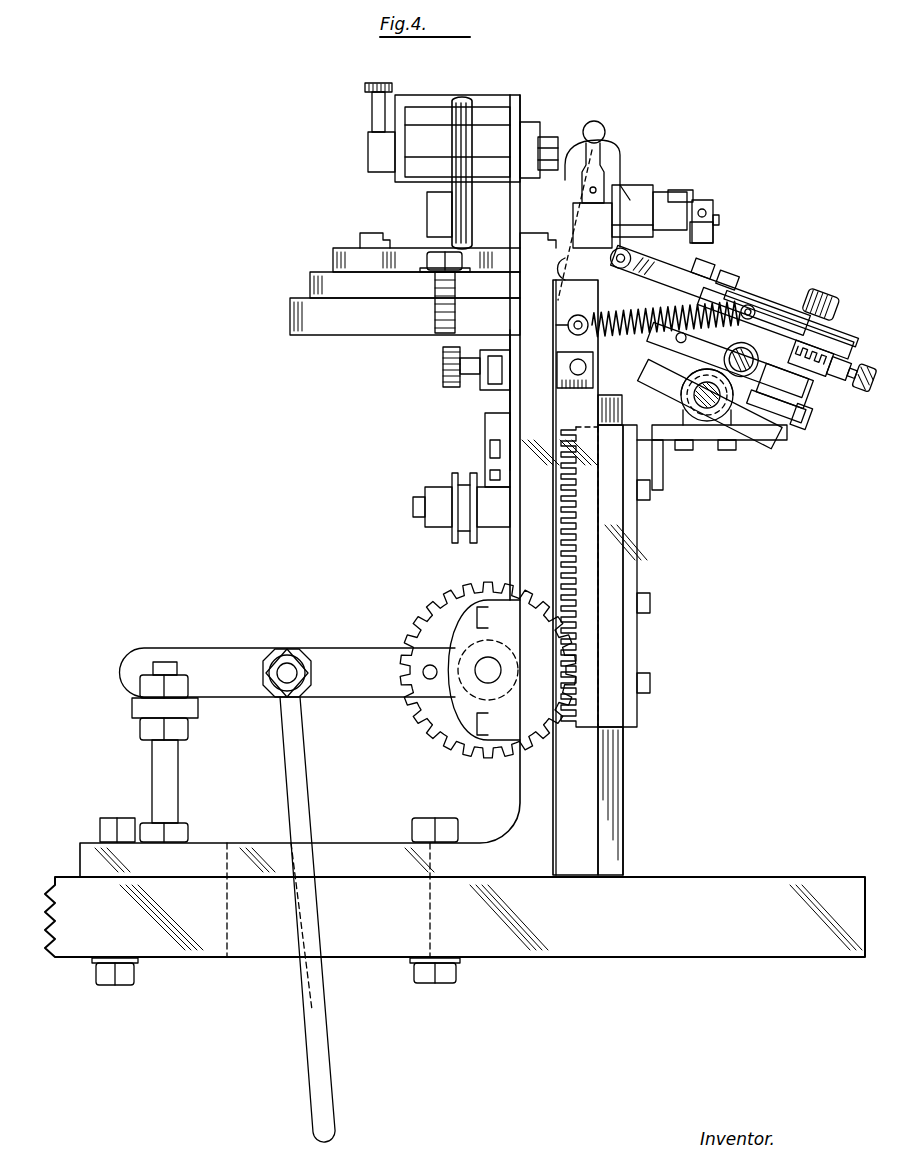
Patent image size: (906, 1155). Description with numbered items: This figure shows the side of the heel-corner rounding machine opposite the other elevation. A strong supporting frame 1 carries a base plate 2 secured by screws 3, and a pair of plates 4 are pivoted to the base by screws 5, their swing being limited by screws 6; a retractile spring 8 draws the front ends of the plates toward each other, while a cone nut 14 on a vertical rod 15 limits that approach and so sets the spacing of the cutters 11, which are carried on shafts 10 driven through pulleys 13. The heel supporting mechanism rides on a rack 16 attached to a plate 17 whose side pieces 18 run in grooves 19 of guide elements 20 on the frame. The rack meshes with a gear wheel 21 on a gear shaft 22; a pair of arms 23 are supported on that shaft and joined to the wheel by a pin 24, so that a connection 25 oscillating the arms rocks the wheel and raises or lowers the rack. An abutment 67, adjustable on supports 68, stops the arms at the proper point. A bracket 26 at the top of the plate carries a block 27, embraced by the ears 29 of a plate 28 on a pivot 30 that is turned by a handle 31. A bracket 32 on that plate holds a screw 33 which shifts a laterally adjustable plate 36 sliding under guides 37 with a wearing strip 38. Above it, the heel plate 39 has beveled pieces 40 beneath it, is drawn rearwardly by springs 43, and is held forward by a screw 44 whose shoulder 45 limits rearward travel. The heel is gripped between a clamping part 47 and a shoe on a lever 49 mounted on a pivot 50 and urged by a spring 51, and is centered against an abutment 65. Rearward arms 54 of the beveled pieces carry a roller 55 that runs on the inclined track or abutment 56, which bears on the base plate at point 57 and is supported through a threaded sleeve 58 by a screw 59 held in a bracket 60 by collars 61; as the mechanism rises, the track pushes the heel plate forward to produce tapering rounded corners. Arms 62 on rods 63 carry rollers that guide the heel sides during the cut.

The supporting frame 1 is at (290, 320).
The base plate 2 is at (310, 285).
The screws 3 is at (440, 298).
The plates 4 is at (333, 262).
The screws 5 is at (372, 240).
The screws 6 is at (532, 240).
The retractile spring 8 is at (603, 128).
The shaft 10 is at (432, 204).
The cutter 11 is at (668, 205).
The pulleys 13 is at (456, 232).
The cone nut 14 is at (584, 170).
The vertical rod 15 is at (563, 158).
The rack 16 is at (590, 573).
The plate 17 is at (630, 660).
The side pieces 18 is at (608, 712).
The grooves 19 is at (612, 815).
The guide elements 20 is at (582, 762).
The gear wheel 21 is at (460, 723).
The gear shaft 22 is at (482, 672).
The arms 23 is at (223, 665).
The pin 24 is at (428, 675).
The connection 25 is at (292, 737).
The bracket 26 is at (640, 545).
The block 27 is at (682, 418).
The plate 28 is at (806, 402).
The ears 29 is at (730, 414).
The pivot 30 is at (707, 398).
The handle 31 is at (662, 372).
The bracket 32 is at (778, 397).
The screw 33 is at (768, 378).
The laterally adjustable plate 36 is at (818, 375).
The guides 37 is at (700, 325).
The wearing strip 38 is at (733, 345).
The plate 39 is at (792, 330).
The beveled pieces 40 is at (822, 340).
The springs 43 is at (645, 333).
The screw 44 is at (866, 392).
The shoulder 45 is at (842, 380).
The clamping part 47 is at (705, 270).
The lever 49 is at (742, 298).
The pivot 50 is at (727, 278).
The spring 51 is at (820, 300).
The arms 54 is at (660, 275).
The roller 55 is at (630, 323).
The track or abutment 56 is at (618, 148).
The pivotal bearing point 57 is at (574, 287).
The internally threaded sleeve 58 is at (568, 368).
The screw 59 is at (443, 366).
The bracket 60 is at (495, 400).
The collars 61 is at (480, 370).
The arms 62 is at (713, 236).
The rods 63 is at (715, 218).
The abutment 65 is at (617, 200).
The abutment 67 is at (140, 706).
The supports 68 is at (160, 775).